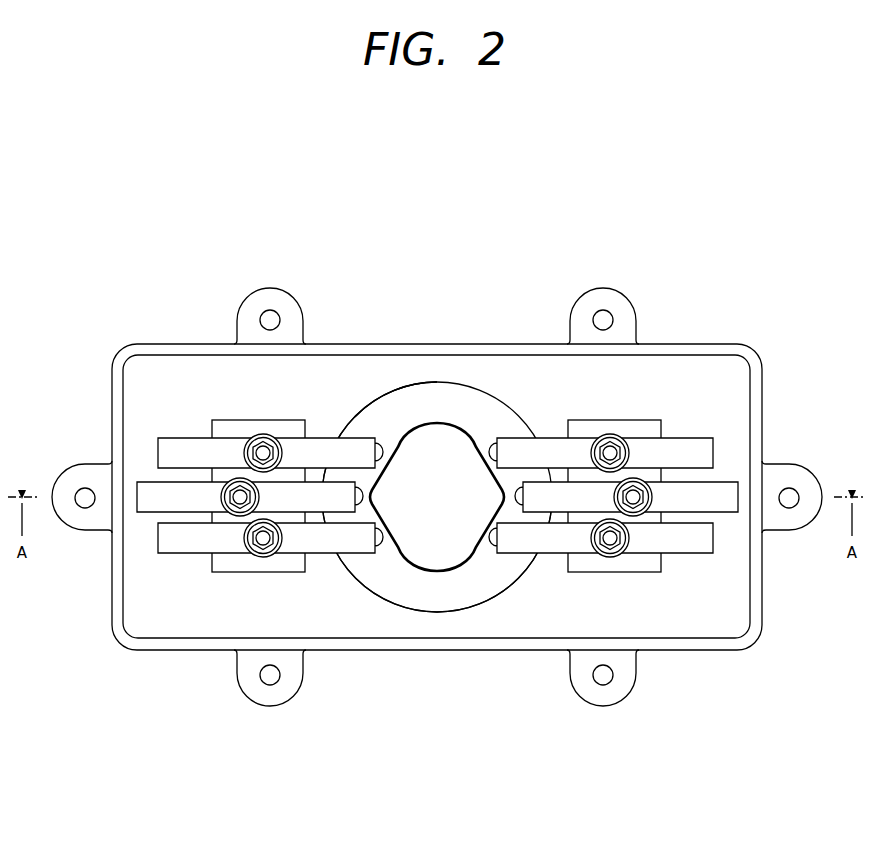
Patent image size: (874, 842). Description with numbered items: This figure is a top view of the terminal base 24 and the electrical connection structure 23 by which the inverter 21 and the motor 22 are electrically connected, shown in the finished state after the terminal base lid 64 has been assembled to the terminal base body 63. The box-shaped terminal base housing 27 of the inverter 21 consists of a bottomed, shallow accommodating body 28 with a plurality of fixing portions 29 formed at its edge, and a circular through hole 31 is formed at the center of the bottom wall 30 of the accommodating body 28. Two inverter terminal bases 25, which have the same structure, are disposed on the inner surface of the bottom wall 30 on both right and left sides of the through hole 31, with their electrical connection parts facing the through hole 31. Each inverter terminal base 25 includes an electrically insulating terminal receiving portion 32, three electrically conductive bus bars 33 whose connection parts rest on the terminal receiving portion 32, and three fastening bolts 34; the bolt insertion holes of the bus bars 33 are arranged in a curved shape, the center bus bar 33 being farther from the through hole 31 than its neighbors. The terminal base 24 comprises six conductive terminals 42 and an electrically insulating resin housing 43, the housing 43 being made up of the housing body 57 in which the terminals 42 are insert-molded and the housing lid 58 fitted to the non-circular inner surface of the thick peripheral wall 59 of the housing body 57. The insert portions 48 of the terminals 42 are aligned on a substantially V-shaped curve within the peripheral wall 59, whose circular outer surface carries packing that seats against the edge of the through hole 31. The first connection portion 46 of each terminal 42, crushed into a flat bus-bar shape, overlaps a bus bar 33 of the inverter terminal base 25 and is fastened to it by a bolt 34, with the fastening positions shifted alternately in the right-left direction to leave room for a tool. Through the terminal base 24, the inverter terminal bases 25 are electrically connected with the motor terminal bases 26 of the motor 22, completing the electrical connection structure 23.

The inverter 21 is at (155, 656).
The motor 22 is at (193, 650).
The electrical connection structure 23 is at (758, 265).
The terminal base 24 is at (489, 390).
The inverter terminal base 25 is at (210, 416).
The motor terminal base 26 is at (447, 553).
The terminal base housing 27 is at (612, 760).
The accommodating body 28 is at (677, 648).
The fixing portion 29 is at (618, 693).
The bottom wall 30 is at (727, 608).
The through hole 31 is at (494, 592).
The terminal receiving portion 32 is at (648, 567).
The bus bar 33 is at (687, 541).
The fastening bolt 34 is at (610, 543).
The terminal 42 is at (345, 452).
The housing 43 is at (370, 262).
The first connection portion 46 is at (580, 544).
The insert portion 48 is at (483, 535).
The housing body 57 is at (387, 407).
The housing lid 58 is at (433, 440).
The peripheral wall 59 is at (380, 587).
The terminal base body 63 is at (350, 581).
The terminal base lid 64 is at (419, 549).